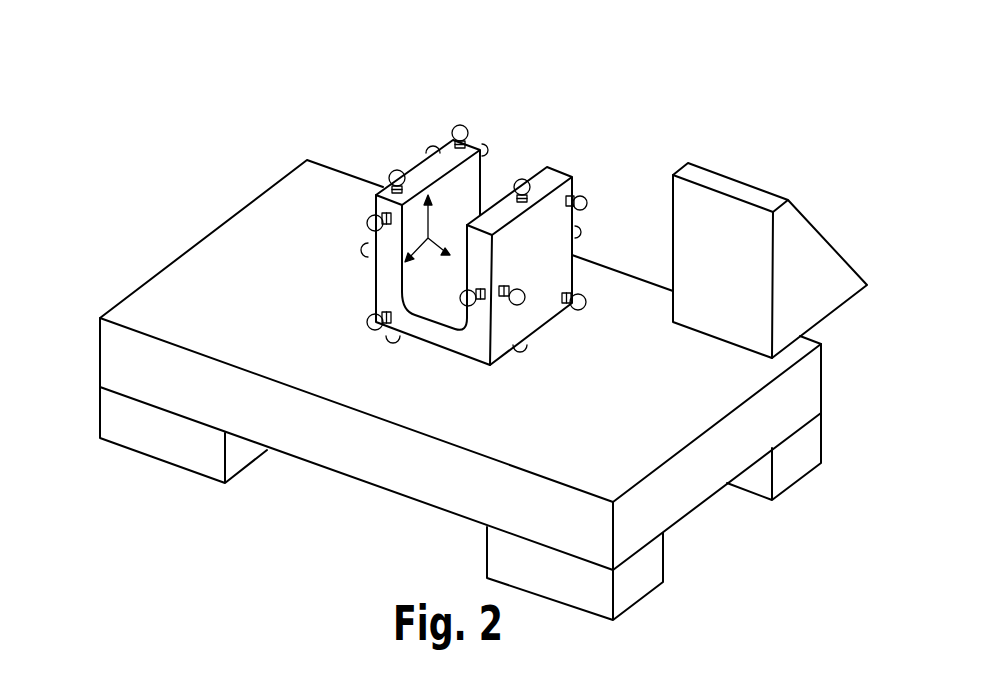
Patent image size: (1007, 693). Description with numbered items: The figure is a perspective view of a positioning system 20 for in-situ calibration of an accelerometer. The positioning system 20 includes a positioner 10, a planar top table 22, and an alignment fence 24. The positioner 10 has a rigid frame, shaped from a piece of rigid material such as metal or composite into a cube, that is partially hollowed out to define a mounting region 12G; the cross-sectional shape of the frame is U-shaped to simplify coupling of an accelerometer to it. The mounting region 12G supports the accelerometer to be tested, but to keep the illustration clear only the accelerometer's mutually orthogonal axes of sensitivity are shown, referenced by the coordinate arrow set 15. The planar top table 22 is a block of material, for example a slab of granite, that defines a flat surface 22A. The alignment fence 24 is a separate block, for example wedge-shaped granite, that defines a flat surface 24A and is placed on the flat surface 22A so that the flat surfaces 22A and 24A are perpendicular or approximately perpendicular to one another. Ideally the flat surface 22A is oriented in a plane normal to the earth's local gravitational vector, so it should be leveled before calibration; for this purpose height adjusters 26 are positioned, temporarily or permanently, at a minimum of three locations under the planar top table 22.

The positioner 10 is at (400, 316).
The mounting region 12G is at (440, 300).
The coordinate arrow set 15 is at (432, 209).
The positioning system 20 is at (80, 613).
The planar top table 22 is at (457, 365).
The flat surface 22A is at (260, 243).
The alignment fence 24 is at (781, 292).
The flat surface 24A is at (732, 293).
The height adjusters 26 is at (183, 460).